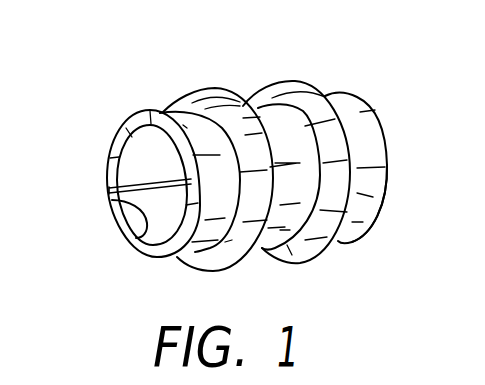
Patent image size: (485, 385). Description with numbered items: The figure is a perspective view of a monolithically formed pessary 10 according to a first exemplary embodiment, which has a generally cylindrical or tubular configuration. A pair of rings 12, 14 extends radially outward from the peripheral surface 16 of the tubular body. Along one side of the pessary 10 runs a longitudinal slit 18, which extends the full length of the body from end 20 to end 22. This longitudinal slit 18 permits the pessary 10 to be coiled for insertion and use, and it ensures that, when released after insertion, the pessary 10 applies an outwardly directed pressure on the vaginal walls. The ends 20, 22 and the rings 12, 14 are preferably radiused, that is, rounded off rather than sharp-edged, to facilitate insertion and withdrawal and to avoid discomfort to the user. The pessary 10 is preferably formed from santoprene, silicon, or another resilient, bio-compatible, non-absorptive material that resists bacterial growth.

The pessary 10 is at (212, 54).
The ring 12 is at (235, 92).
The ring 14 is at (310, 82).
The peripheral surface 16 is at (350, 118).
The longitudinal slit 18 is at (150, 222).
The end 20 is at (127, 130).
The end 22 is at (385, 192).